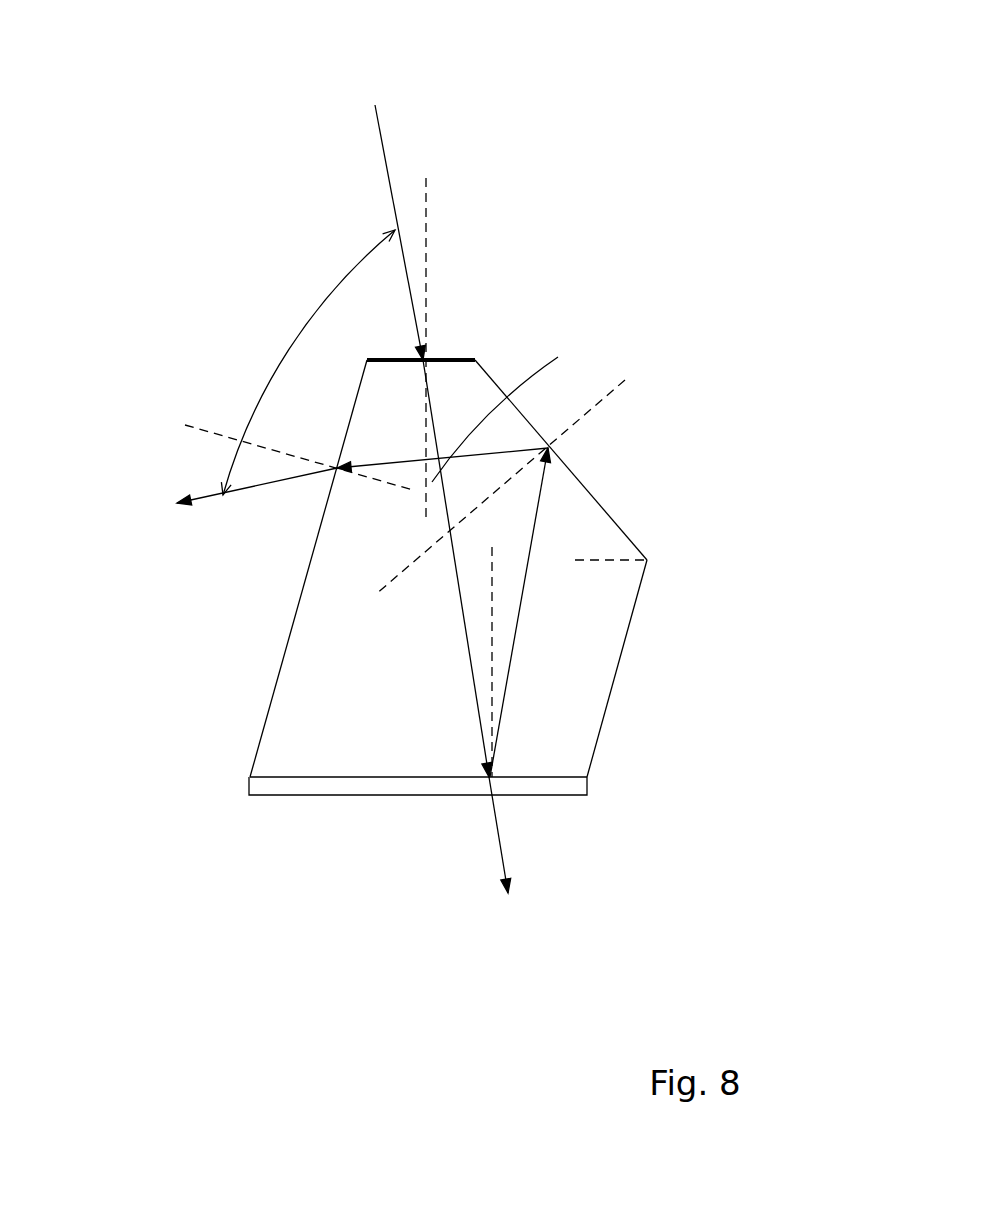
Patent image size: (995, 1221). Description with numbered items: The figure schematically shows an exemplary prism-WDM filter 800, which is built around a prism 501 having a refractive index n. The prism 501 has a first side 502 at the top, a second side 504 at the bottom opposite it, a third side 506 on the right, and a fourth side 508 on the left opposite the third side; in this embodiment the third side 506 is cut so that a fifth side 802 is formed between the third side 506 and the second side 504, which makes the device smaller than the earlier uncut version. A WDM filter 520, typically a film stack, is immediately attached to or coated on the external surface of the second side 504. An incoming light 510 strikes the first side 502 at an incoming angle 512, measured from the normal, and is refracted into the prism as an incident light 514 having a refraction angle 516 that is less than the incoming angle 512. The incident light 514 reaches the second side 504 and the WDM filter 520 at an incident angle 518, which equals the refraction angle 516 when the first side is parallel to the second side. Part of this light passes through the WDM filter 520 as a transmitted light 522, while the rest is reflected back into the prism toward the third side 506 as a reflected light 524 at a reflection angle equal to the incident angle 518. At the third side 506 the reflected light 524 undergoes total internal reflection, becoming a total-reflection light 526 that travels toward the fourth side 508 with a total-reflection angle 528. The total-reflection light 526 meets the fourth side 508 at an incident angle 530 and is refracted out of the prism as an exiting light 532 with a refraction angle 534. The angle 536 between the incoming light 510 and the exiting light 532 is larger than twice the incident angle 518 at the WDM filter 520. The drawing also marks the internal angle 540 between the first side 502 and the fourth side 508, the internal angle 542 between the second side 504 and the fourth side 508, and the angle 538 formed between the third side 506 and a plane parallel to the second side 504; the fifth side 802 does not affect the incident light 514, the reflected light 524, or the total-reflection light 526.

The prism-WDM filter 800 is at (323, 47).
The incoming light 510 is at (381, 137).
The incoming angle α' 512 is at (413, 263).
The angle ε 536 is at (332, 293).
The internal angle χ 540 is at (378, 385).
The prism 501 is at (465, 543).
The first side S1 502 is at (450, 358).
The third side S3 506 is at (605, 511).
The fifth side S5 802 is at (603, 713).
The second side S2 504 is at (523, 775).
The fourth side S4 508 is at (283, 660).
The WDM filter 520 is at (590, 778).
The incident angle α 518 is at (475, 672).
The transmitted light 522 is at (503, 853).
The reflected light 524 is at (516, 637).
The total-reflection angle θ 528 is at (538, 482).
The total-reflection light 526 is at (522, 433).
The internal angle β 538 is at (622, 547).
The incident light 514 is at (436, 420).
The refraction angle γ 516 is at (574, 339).
The incident angle δ 530 is at (385, 472).
The refraction angle δ' 534 is at (287, 467).
The exiting light 532 is at (212, 500).
The internal angle η 542 is at (285, 732).